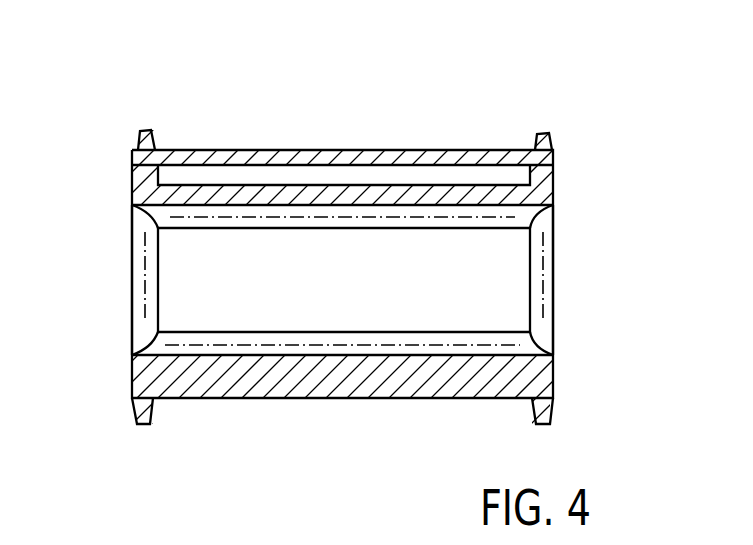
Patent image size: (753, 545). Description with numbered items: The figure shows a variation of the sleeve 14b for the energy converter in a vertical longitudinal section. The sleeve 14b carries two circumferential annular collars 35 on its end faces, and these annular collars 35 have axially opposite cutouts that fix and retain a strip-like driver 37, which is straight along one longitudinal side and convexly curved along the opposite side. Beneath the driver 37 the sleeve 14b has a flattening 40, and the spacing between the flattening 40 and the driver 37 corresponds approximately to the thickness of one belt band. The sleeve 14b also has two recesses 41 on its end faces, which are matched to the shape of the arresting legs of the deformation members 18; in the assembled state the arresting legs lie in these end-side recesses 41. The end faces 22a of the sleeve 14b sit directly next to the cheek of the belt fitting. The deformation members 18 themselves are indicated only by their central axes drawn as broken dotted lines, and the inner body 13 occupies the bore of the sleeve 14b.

The sleeve 14b is at (510, 132).
The strip-like driver 37 is at (325, 150).
The flattening 40 is at (413, 185).
The end face 22a is at (555, 184).
The roller body 13 is at (442, 323).
The recess 41 is at (545, 333).
The deformation member 18 is at (253, 216).
The annular collar 35 is at (548, 419).